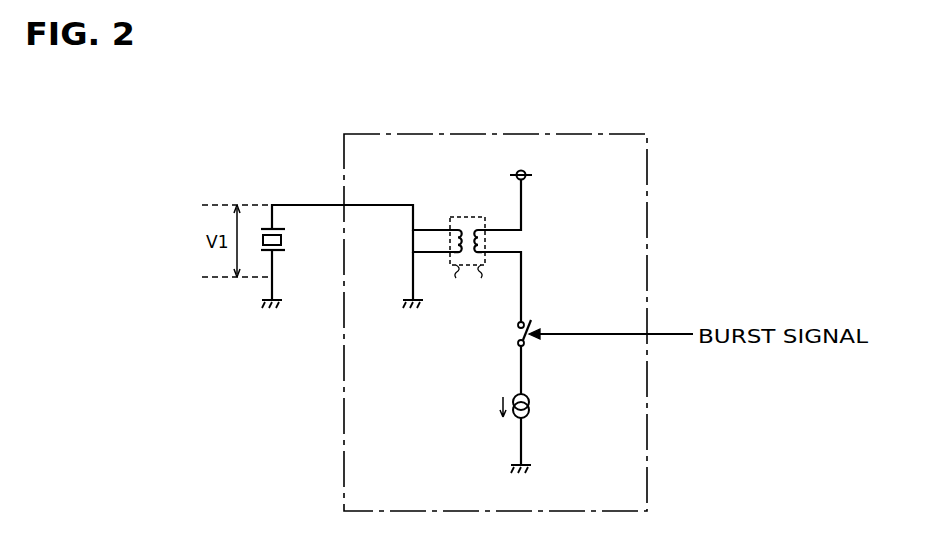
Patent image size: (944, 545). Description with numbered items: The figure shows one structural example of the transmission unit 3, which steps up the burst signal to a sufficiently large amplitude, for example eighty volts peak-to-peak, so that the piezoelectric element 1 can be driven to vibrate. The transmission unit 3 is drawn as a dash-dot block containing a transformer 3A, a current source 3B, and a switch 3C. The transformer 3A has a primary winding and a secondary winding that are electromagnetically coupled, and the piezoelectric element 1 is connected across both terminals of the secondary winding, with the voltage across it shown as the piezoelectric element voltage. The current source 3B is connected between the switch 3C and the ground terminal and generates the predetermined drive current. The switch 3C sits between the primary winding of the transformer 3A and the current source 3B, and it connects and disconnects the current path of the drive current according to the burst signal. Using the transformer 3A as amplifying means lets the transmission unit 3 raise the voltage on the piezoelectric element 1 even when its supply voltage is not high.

The piezoelectric element 1 is at (285, 240).
The transmission unit 3 is at (498, 134).
The transformer 3A is at (470, 217).
The current source 3B is at (532, 406).
The switch 3C is at (512, 334).